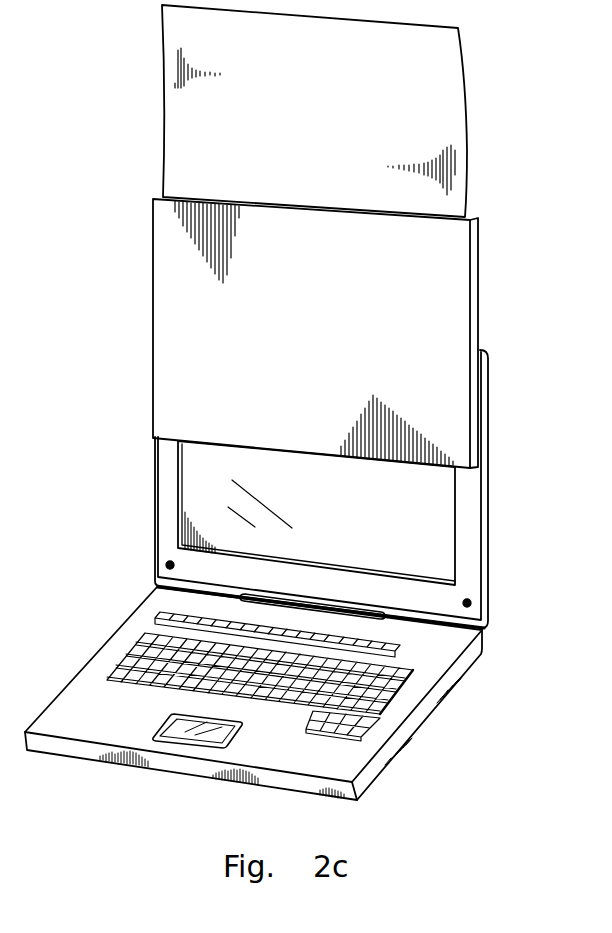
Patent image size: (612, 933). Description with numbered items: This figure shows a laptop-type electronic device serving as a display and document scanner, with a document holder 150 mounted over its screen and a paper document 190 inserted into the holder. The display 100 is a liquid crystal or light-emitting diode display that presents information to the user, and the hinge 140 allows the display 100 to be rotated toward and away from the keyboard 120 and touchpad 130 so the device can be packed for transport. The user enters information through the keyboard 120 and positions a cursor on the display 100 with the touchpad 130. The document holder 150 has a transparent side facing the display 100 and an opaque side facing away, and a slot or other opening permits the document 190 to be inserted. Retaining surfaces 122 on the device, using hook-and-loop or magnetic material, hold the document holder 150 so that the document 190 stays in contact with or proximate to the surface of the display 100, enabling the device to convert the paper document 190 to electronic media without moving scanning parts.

The document 190 is at (448, 90).
The document holder 150 is at (455, 288).
The display 100 is at (197, 470).
The retaining surfaces 122 is at (167, 561).
The hinge 140 is at (353, 610).
The keyboard 120 is at (150, 662).
The touchpad 130 is at (173, 727).